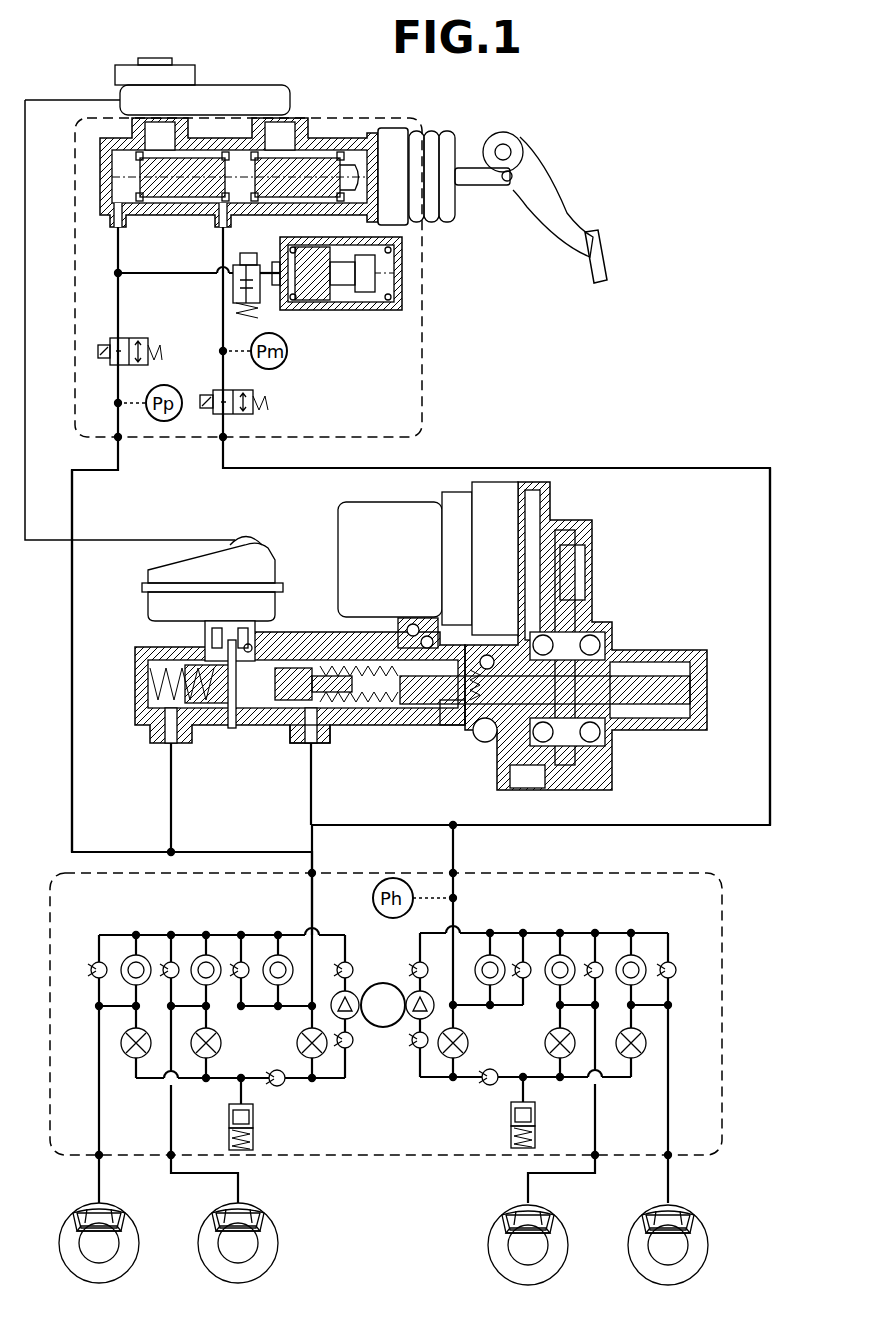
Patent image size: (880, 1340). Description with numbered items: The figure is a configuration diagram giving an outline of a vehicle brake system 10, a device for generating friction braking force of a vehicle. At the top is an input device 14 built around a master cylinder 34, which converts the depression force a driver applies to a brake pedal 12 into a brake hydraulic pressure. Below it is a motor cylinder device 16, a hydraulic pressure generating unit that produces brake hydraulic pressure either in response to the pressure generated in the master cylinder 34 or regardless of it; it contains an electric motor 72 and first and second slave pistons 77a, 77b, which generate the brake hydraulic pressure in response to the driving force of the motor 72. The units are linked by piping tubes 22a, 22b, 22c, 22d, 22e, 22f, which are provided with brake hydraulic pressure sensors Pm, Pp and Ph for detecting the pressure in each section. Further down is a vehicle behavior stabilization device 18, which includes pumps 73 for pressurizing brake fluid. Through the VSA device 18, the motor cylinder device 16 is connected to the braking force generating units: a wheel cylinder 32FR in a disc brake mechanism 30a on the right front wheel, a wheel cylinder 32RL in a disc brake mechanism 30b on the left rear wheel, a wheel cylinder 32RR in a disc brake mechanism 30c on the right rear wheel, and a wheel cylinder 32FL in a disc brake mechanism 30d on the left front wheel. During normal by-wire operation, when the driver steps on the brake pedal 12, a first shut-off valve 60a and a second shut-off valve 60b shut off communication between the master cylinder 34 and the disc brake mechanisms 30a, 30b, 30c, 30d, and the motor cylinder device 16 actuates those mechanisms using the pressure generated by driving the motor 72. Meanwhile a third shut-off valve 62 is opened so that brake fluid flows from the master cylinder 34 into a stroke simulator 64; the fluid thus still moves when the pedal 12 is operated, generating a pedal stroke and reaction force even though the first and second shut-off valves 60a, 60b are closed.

The vehicle brake system 10 is at (540, 105).
The brake pedal 12 is at (607, 252).
The input device 14 is at (423, 338).
The motor cylinder device 16 is at (421, 612).
The vehicle behavior stabilization device (VSA device) 18 is at (612, 866).
The piping tube 22a is at (771, 558).
The piping tube 22b is at (350, 824).
The piping tube 22c is at (458, 843).
The piping tube 22d is at (70, 640).
The piping tube 22e is at (169, 803).
The piping tube 22f is at (305, 853).
The disc brake mechanism 30a is at (705, 1270).
The disc brake mechanism 30b is at (565, 1270).
The disc brake mechanism 30c is at (275, 1268).
The disc brake mechanism 30d is at (135, 1268).
The wheel cylinder 32FL is at (124, 1220).
The wheel cylinder 32RR is at (263, 1220).
The wheel cylinder 32RL is at (553, 1222).
The wheel cylinder 32FR is at (693, 1222).
The master cylinder 34 is at (325, 135).
The first shut-off valve 60a is at (252, 384).
The second shut-off valve 60b is at (131, 338).
The third shut-off valve 62 is at (252, 262).
The stroke simulator 64 is at (405, 256).
The electric motor 72 is at (405, 570).
The pump 73 is at (405, 1022).
The first slave piston 77a is at (438, 738).
The second slave piston 77b is at (282, 722).